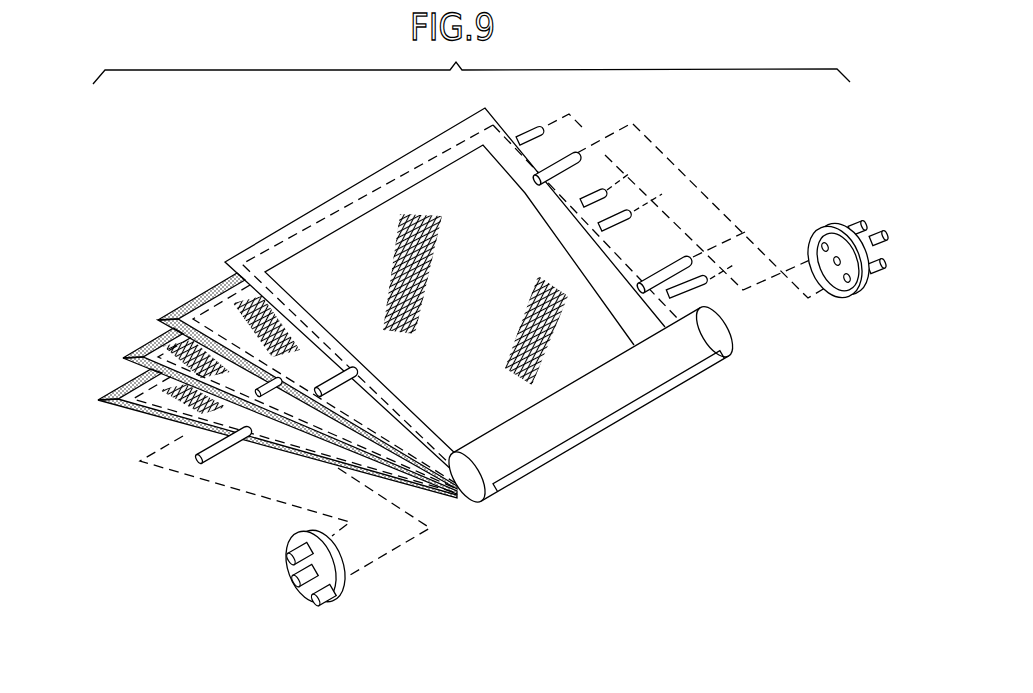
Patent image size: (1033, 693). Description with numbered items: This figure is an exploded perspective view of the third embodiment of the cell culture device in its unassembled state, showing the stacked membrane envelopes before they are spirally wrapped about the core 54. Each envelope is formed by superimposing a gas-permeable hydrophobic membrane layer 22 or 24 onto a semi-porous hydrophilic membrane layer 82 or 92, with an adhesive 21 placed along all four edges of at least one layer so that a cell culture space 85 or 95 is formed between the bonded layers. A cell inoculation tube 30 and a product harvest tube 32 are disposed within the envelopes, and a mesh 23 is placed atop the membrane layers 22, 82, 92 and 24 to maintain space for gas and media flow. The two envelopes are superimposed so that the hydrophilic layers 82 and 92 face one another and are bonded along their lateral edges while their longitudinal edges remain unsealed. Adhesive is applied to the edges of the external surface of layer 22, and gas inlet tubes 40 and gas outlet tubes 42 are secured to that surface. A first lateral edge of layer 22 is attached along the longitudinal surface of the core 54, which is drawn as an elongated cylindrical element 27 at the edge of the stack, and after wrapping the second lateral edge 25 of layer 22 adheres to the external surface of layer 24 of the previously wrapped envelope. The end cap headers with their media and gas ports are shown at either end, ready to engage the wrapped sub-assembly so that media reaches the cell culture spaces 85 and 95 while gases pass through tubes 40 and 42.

The adhesive 21 is at (420, 150).
The gas-permeable hydrophobic membrane layer 22 is at (297, 252).
The mesh 23 is at (347, 218).
The gas-permeable hydrophobic membrane layer 24 is at (114, 402).
The second lateral edge 25 is at (380, 168).
The roller 27 is at (673, 385).
The cell inoculation tube 30 is at (222, 451).
The product harvest tube 32 is at (532, 133).
The gas inlet tubes 40 is at (359, 360).
The gas outlet tubes 42 is at (574, 155).
The core 54 is at (617, 393).
The semi-porous hydrophilic membrane layer 82 is at (218, 288).
The cell culture space 85 is at (314, 367).
The semi-porous hydrophilic membrane layer 92 is at (158, 346).
The cell culture space 95 is at (185, 416).